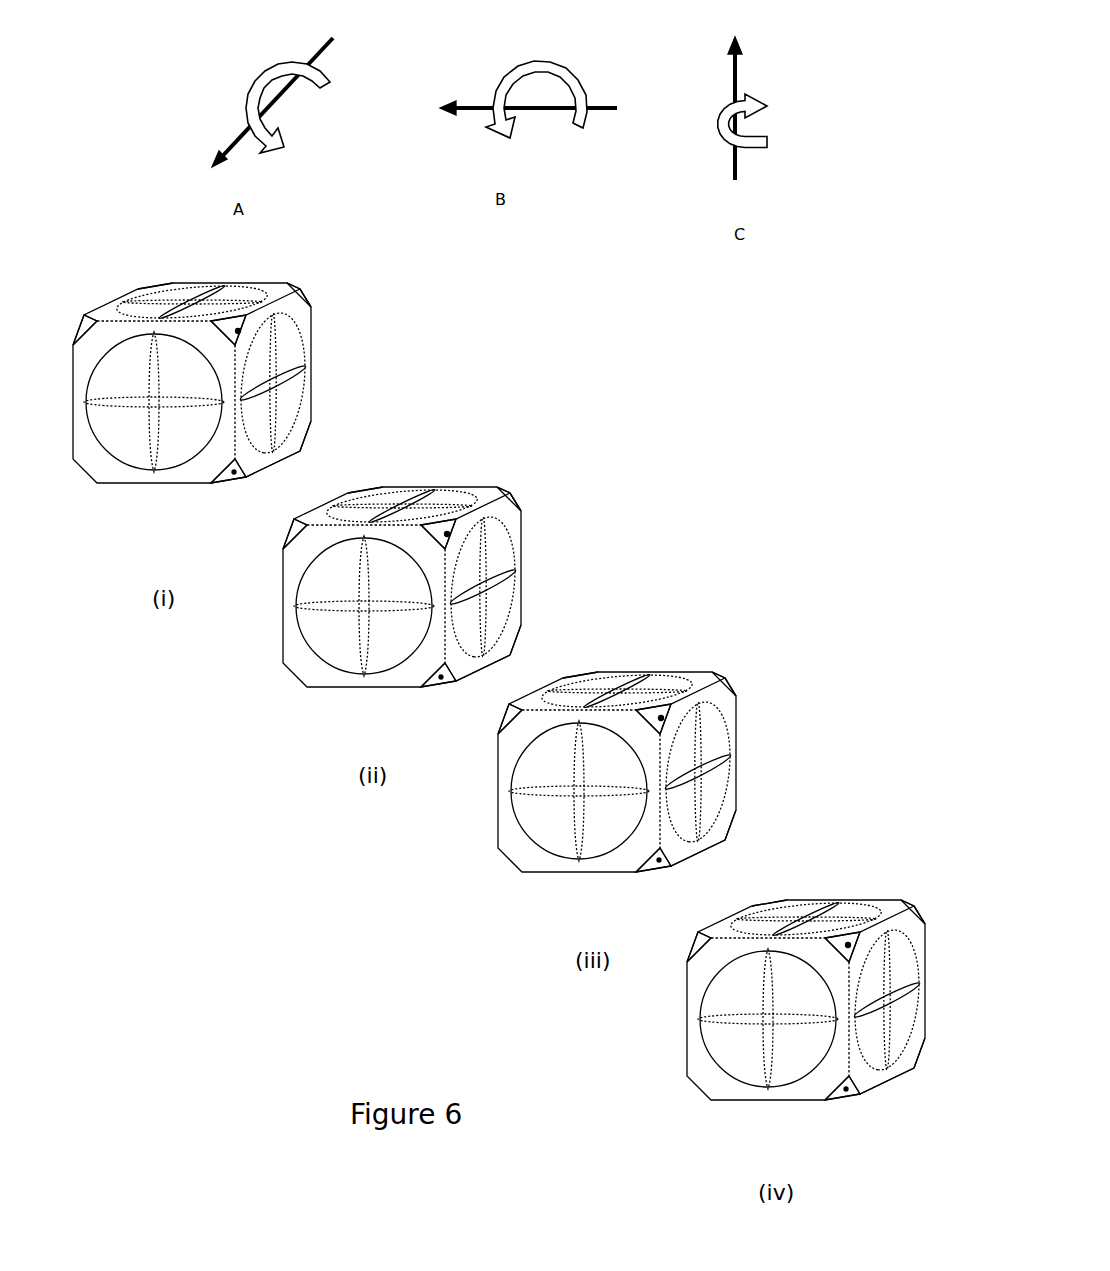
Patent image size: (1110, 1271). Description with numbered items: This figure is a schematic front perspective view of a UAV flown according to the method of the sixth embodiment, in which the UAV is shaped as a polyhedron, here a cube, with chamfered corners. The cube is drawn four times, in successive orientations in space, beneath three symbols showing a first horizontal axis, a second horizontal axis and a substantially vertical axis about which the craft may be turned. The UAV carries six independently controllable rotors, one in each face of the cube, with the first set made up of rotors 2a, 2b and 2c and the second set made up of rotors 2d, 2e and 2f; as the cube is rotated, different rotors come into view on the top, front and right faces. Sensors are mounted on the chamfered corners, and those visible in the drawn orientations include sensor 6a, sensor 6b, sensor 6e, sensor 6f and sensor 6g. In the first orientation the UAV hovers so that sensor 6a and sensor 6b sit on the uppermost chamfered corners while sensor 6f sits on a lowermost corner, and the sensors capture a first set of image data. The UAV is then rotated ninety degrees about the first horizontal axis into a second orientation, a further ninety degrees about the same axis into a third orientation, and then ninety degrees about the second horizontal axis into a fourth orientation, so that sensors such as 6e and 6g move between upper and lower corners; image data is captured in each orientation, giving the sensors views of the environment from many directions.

The rotor 2a is at (200, 294).
The rotor 2b is at (154, 462).
The rotor 2c is at (290, 376).
The rotor 2d is at (640, 686).
The rotor 2e is at (818, 915).
The rotor 2f is at (405, 498).
The sensor 6a is at (88, 322).
The sensor 6b is at (236, 333).
The sensor 6e is at (298, 524).
The sensor 6f is at (234, 474).
The sensor 6g is at (703, 942).